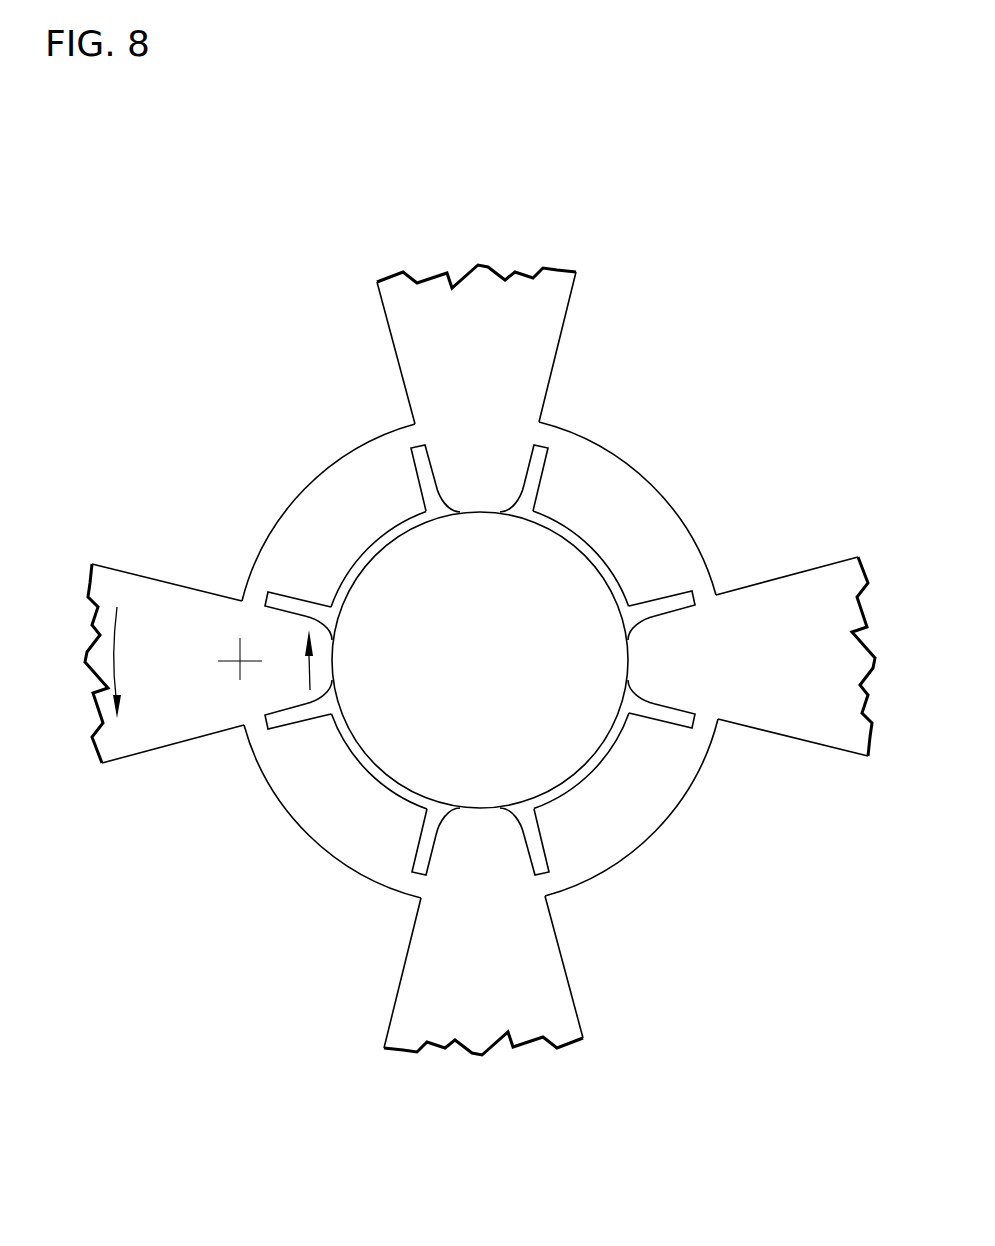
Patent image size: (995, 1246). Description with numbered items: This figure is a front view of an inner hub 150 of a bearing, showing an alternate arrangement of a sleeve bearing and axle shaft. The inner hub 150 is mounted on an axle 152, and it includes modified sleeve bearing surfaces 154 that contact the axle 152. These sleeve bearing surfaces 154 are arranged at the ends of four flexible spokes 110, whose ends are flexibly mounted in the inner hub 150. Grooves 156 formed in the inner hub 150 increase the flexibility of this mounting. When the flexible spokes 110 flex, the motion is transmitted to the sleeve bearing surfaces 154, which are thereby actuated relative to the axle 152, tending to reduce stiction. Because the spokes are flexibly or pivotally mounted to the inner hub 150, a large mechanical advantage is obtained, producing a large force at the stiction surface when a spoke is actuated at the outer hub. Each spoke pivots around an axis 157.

The flexible spoke 110 is at (425, 310).
The inner hub 150 is at (595, 485).
The axle 152 is at (503, 652).
The sleeve bearing surface 154 is at (480, 514).
The groove 156 is at (683, 602).
The axis 157 is at (240, 668).